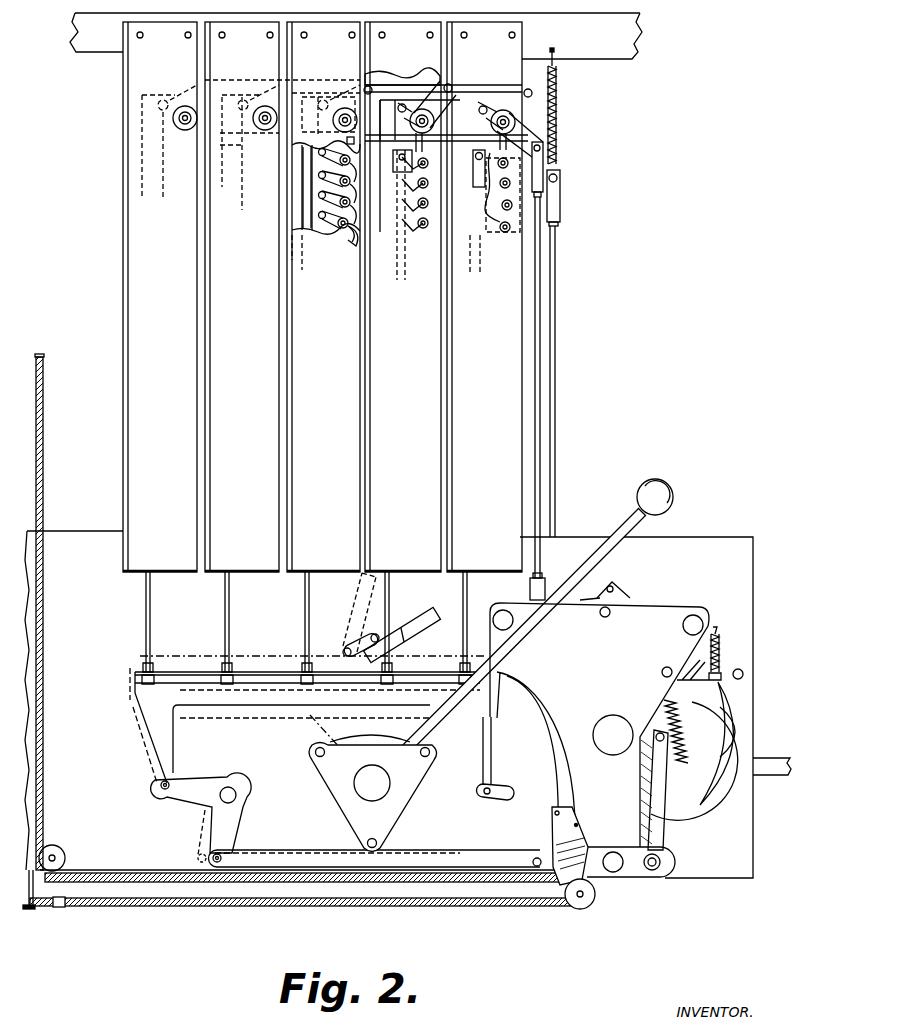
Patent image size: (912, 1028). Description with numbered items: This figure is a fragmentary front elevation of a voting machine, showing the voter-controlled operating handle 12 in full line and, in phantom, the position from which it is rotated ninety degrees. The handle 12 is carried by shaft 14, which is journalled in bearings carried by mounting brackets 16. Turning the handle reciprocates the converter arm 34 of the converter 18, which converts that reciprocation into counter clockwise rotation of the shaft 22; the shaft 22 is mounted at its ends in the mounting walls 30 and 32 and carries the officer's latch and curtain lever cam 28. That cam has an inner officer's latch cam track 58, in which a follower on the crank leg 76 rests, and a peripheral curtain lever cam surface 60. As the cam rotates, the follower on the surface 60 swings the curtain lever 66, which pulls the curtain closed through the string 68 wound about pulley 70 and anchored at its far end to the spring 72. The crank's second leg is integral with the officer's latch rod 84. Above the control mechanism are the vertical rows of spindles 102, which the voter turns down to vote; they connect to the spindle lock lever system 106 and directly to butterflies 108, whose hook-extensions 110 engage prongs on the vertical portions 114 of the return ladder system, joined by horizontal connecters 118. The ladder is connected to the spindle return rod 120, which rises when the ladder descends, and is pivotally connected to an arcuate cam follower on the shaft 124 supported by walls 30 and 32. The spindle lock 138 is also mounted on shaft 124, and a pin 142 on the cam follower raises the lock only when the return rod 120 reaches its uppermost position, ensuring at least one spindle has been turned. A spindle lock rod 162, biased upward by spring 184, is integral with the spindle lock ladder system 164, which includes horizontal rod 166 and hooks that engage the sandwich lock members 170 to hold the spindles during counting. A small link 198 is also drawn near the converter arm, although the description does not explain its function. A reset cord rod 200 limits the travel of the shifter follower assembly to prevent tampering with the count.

The operating handle 12 is at (622, 520).
The shaft 14 is at (360, 786).
The mounting brackets 16 is at (352, 815).
The converter 18 is at (744, 699).
The shaft 22 is at (605, 722).
The officer's latch and curtain lever cam 28 is at (702, 813).
The mounting wall 30 is at (710, 552).
The mounting wall 32 is at (673, 607).
The converter arm 34 is at (455, 720).
The officer's latch cam track 58 is at (662, 712).
The curtain lever cam surface 60 is at (720, 792).
The curtain lever 66 is at (585, 878).
The string 68 is at (463, 908).
The pulley 70 is at (580, 910).
The spring 72 is at (43, 452).
The leg 76 is at (337, 232).
The officer's latch rod 84 is at (775, 758).
The spindles 102 is at (500, 233).
The spindle lock lever system 106 is at (293, 205).
The butterflies 108 is at (495, 222).
The hook-extension 110 is at (483, 232).
The vertical portion 114 is at (309, 228).
The horizontal connecters 118 is at (385, 87).
The spindle return rod 120 is at (540, 163).
The shaft 124 is at (608, 616).
The spindle lock 138 is at (592, 595).
The pin 142 is at (608, 585).
The spindle lock rod 162 is at (557, 376).
The spindle lock ladder system 164 is at (466, 128).
The horizontal rod 166 is at (392, 140).
The sandwich lock members 170 is at (350, 232).
The spring 184 is at (558, 108).
The link 198 is at (488, 798).
The reset cord rod 200 is at (413, 667).